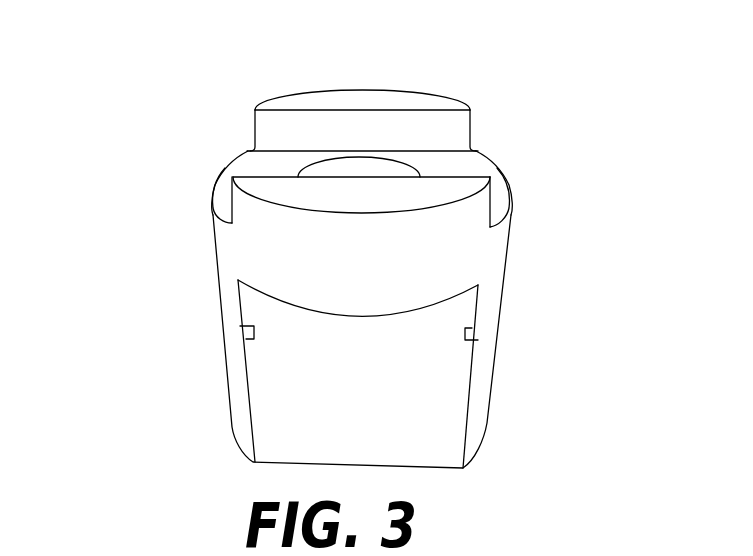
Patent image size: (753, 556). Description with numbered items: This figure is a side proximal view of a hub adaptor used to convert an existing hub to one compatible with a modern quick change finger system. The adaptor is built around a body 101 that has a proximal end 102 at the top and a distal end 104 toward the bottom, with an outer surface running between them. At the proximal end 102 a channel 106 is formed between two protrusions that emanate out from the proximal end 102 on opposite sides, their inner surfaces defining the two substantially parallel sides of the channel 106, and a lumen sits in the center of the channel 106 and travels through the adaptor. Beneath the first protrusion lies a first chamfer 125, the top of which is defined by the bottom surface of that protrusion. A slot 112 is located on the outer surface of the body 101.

The body 101 is at (357, 403).
The proximal end 102 is at (443, 130).
The distal end 104 is at (320, 117).
The channel 106 is at (262, 159).
The slot 112 is at (246, 339).
The first chamfer 125 is at (417, 385).